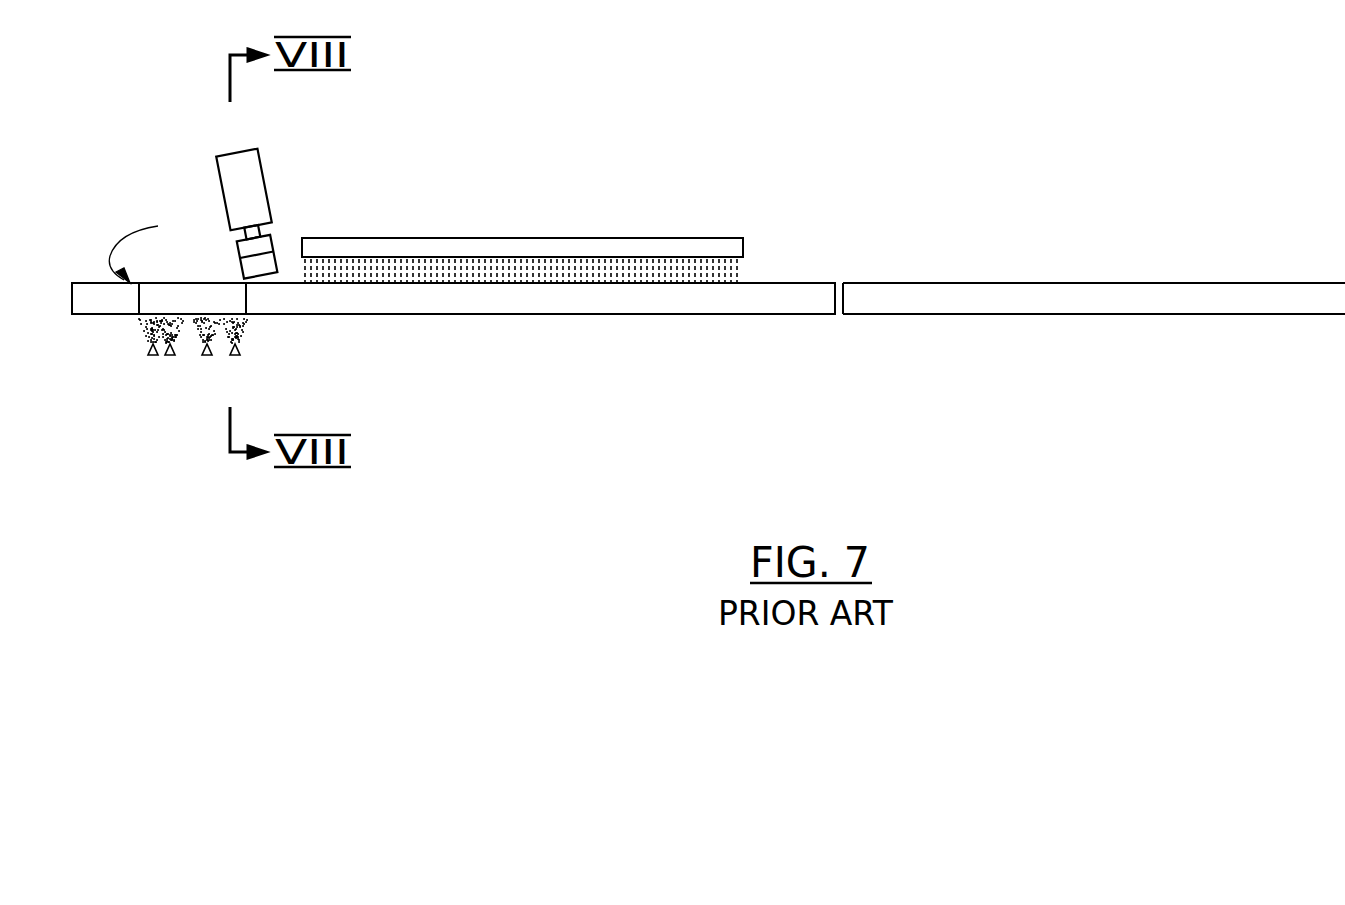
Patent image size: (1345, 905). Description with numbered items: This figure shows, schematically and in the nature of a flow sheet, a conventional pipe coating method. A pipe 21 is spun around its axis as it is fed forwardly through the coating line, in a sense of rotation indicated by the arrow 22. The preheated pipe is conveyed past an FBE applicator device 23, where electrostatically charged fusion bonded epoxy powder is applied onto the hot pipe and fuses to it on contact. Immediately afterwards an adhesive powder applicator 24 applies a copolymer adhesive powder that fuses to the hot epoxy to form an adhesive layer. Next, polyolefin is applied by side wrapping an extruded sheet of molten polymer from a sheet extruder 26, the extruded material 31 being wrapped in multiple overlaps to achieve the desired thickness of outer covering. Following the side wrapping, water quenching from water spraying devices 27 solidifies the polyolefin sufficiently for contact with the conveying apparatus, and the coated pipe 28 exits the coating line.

The pipe 21 is at (81, 292).
The arrow 22 is at (146, 238).
The FBE applicator device 23 is at (148, 346).
The adhesive powder applicator 24 is at (240, 345).
The sheet extruder 26 is at (252, 183).
The water spraying device 27 is at (458, 238).
The coated pipe 28 is at (1030, 288).
The extruded material 31 is at (258, 273).